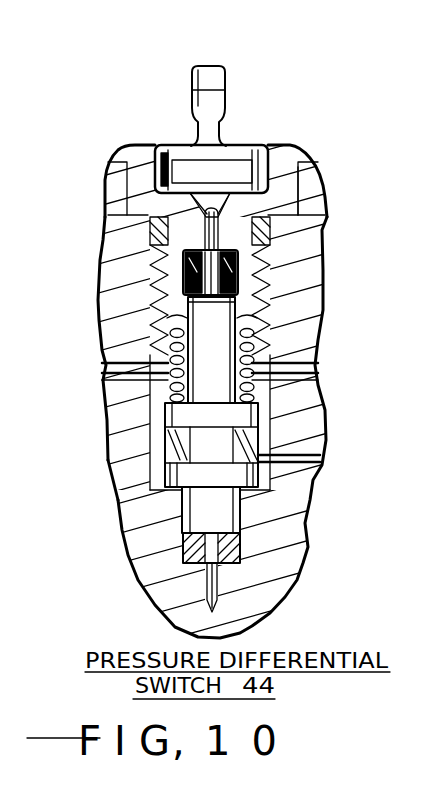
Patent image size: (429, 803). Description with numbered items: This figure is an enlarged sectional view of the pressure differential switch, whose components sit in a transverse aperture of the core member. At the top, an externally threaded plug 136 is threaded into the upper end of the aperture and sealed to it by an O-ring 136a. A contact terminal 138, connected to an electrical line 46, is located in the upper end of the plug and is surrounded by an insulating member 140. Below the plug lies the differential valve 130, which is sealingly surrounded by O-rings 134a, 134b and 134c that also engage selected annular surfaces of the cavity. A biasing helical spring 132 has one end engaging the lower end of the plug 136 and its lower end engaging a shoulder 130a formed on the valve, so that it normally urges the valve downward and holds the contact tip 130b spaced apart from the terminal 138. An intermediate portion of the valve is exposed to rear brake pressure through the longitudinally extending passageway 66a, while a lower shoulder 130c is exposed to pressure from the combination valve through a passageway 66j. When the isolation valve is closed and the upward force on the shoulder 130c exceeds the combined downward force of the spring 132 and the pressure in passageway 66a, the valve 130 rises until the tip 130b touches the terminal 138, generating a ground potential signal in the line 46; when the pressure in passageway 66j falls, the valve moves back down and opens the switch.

The electrical line 46 is at (212, 75).
The longitudinally extending passageway 66a is at (313, 377).
The passageway 66j is at (313, 473).
The differential valve 130 is at (103, 378).
The shoulder 130a is at (165, 402).
The contact tip 130b is at (325, 192).
The lower shoulder 130c is at (177, 508).
The biasing helical spring 132 is at (268, 345).
The O-ring 134a is at (268, 258).
The O-ring 134b is at (312, 432).
The O-ring 134c is at (240, 533).
The externally threaded plug 136 is at (282, 180).
The O-ring 136a is at (268, 230).
The contact terminal 138 is at (228, 178).
The insulating member 140 is at (163, 145).